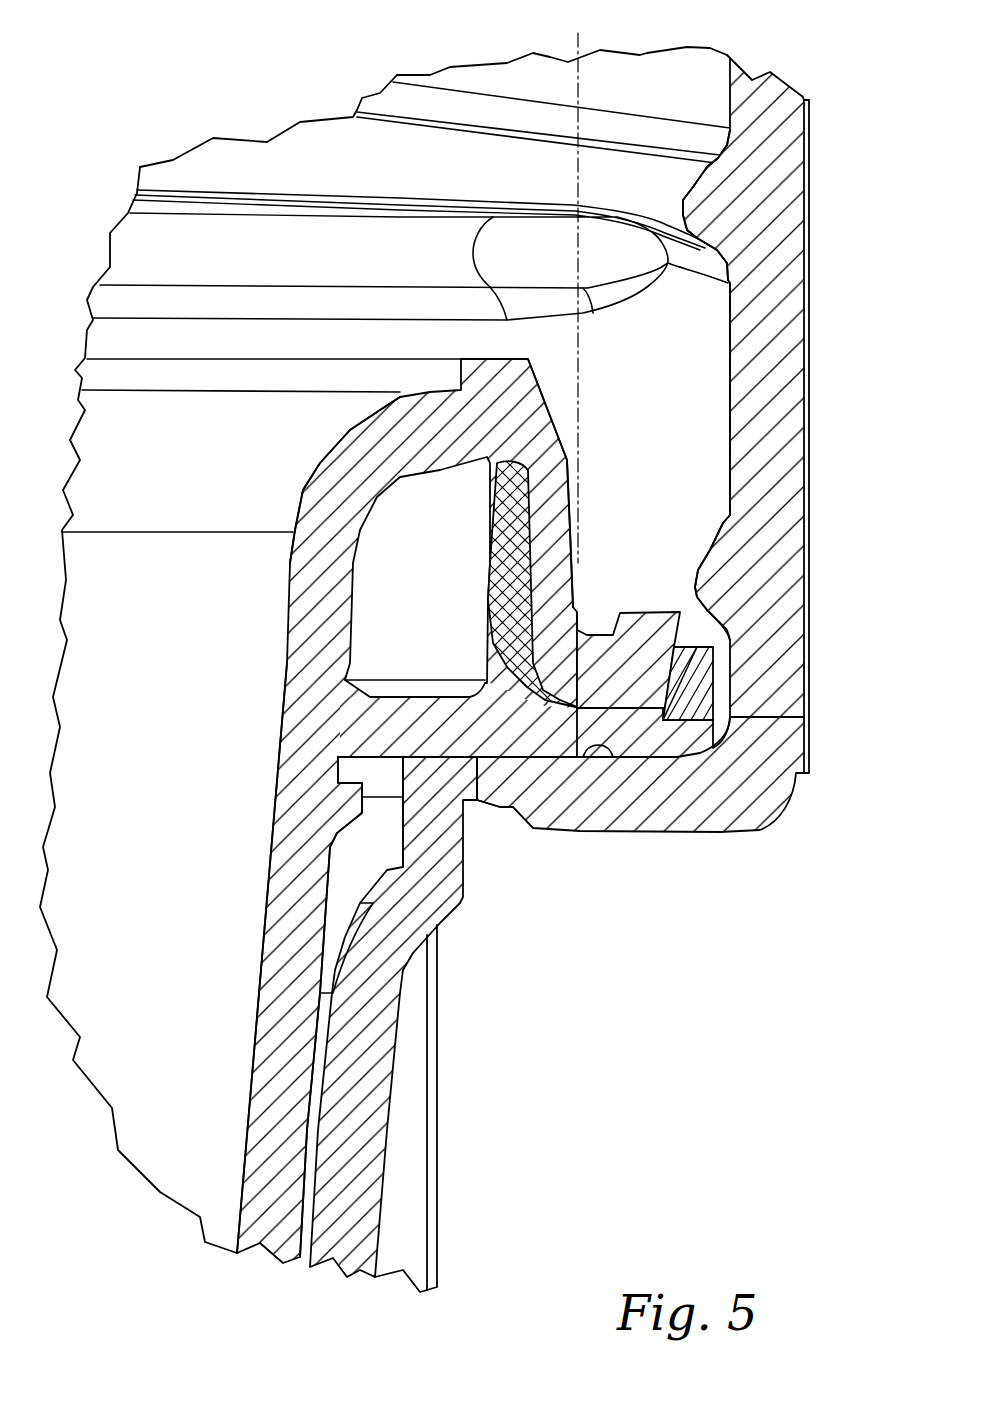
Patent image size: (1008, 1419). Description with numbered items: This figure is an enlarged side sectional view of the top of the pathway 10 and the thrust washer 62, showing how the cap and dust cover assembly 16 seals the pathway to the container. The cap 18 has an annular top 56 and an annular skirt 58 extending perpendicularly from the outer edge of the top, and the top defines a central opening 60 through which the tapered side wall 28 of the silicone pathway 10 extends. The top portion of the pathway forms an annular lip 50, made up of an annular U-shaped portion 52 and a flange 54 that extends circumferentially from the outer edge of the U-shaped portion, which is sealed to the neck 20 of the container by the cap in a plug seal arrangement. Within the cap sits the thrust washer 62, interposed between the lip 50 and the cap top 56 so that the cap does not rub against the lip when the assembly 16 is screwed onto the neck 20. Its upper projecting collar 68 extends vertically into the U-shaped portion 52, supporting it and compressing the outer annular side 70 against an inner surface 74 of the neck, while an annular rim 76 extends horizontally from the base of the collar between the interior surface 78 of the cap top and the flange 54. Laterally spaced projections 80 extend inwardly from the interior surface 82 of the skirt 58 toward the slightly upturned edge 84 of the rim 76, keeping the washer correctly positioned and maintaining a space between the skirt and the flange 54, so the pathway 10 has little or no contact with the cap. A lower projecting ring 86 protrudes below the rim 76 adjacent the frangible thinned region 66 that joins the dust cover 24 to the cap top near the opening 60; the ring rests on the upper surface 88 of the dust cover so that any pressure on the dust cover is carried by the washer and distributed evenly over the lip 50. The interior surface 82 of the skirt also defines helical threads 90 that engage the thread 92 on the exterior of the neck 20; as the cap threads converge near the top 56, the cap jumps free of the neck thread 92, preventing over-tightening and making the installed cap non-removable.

The pathway 10 is at (280, 1102).
The cap and dust cover assembly 16 is at (503, 983).
The cap 18 is at (780, 172).
The neck 20 is at (690, 372).
The dust cover 24 is at (370, 1193).
The side wall 28 is at (255, 1013).
The annular lip 50 is at (265, 464).
The annular U-shaped portion 52 is at (365, 417).
The flange 54 is at (605, 635).
The annular top 56 is at (773, 823).
The annular skirt 58 is at (763, 457).
The central opening 60 is at (133, 827).
The thrust washer 62 is at (447, 680).
The thinned region 66 is at (475, 806).
The upper projecting collar 68 is at (490, 540).
The outer annular side 70 is at (543, 483).
The inner surface 74 is at (573, 190).
The annular rim 76 is at (615, 733).
The interior surface 78 is at (587, 747).
The projections 80 is at (700, 588).
The interior surface 82 is at (735, 328).
The upturned edge 84 is at (697, 687).
The lower projecting ring 86 is at (425, 771).
The upper surface 88 is at (457, 780).
The helical threads 90 is at (683, 200).
The thread 92 is at (440, 168).